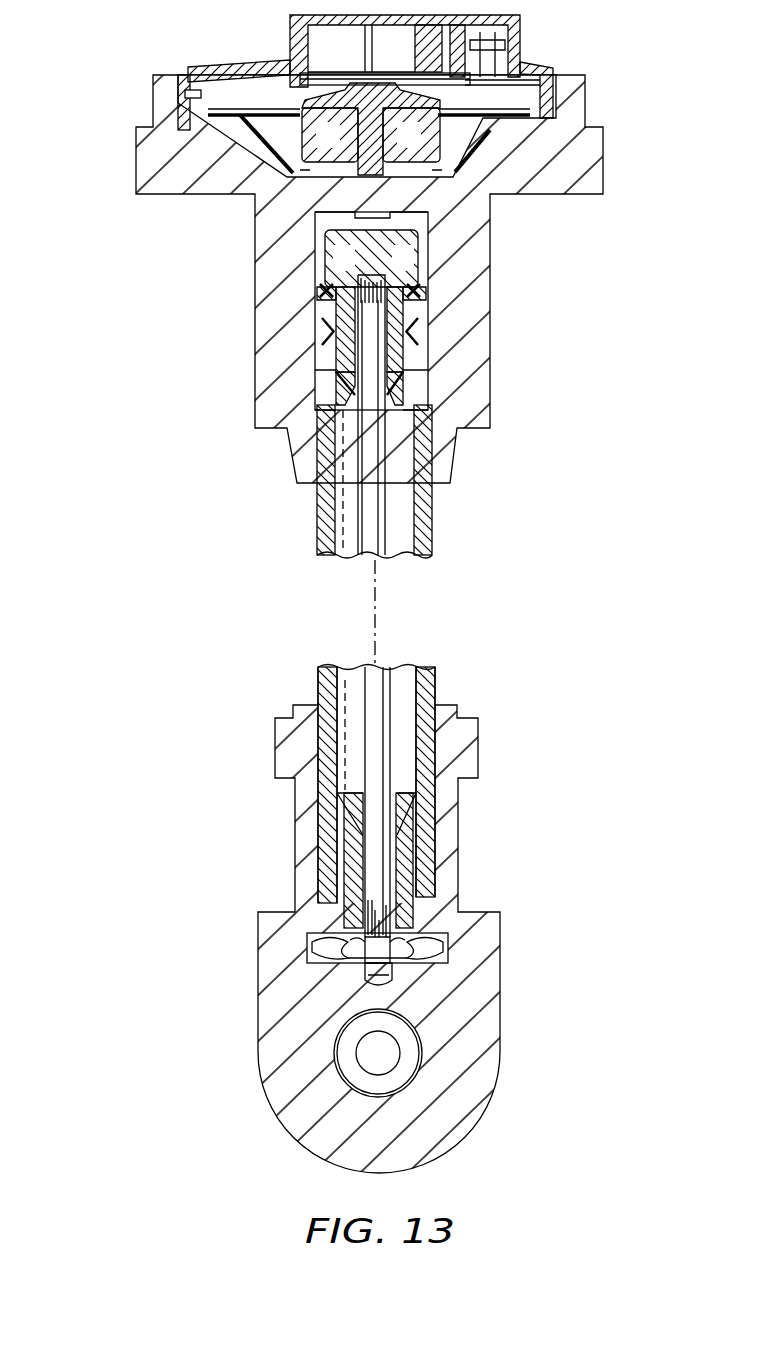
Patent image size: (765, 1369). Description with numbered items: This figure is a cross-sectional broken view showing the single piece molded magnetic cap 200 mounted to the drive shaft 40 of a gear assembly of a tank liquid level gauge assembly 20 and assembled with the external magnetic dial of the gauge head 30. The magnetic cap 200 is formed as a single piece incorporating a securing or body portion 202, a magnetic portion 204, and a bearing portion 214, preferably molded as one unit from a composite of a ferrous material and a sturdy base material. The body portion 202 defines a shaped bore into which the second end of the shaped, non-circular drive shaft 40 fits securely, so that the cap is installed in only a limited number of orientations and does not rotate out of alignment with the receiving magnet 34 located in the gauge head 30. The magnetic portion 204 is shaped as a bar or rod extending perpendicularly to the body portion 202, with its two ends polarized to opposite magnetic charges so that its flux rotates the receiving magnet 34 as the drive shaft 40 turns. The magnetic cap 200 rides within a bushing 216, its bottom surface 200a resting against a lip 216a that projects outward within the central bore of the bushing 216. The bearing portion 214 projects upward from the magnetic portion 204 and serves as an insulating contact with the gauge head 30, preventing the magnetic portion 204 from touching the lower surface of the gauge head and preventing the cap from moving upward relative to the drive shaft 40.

The tank liquid level gauge assembly 20 is at (268, 680).
The gauge head 30 is at (329, 310).
The receiving magnet 34 is at (440, 138).
The drive shaft 40 is at (377, 562).
The magnetic cap 200 is at (376, 218).
The bottom surface 200a is at (405, 380).
The body portion 202 is at (352, 321).
The magnetic portion 204 is at (328, 257).
The bearing portion 214 is at (428, 252).
The bushing 216 is at (428, 340).
The lip 216a is at (345, 348).